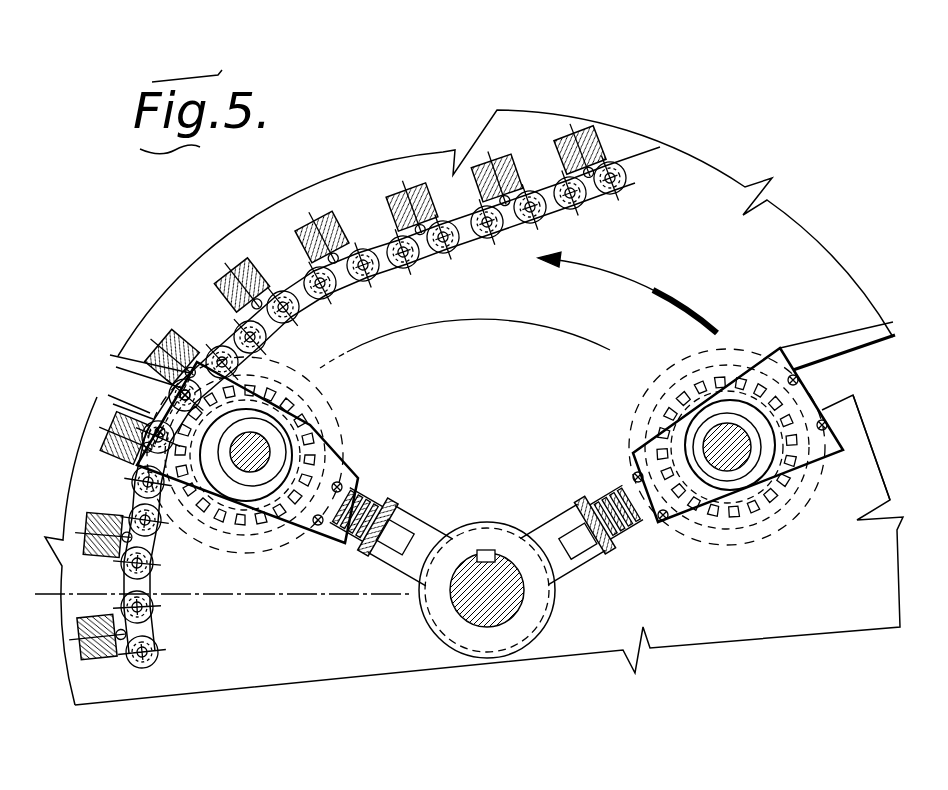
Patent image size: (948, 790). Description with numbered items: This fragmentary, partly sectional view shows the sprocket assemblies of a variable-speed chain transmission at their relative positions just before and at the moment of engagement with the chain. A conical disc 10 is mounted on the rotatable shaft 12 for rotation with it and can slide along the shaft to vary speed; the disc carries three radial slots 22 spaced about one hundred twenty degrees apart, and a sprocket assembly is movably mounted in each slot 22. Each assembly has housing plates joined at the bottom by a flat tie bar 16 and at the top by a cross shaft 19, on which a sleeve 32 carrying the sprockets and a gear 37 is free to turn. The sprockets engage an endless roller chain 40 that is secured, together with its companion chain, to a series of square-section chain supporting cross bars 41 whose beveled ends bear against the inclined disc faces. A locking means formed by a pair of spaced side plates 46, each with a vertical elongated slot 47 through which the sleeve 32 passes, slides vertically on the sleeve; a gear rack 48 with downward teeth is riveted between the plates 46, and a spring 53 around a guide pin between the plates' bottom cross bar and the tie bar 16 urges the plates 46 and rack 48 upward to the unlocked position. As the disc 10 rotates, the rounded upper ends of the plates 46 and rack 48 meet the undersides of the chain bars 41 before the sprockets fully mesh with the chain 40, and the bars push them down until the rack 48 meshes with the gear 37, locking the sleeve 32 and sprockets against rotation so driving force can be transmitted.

The conical disc 10 is at (645, 142).
The rotatable shaft 12 is at (477, 613).
The tie bar 16 is at (368, 552).
The cross shaft 19 is at (268, 440).
The radial slot 22 is at (405, 525).
The sleeve 32 is at (265, 438).
The gear 37 is at (220, 522).
The endless roller chain 40 is at (378, 243).
The chain supporting cross bar 41 is at (303, 243).
The plate 46 is at (140, 468).
The elongated slot 47 is at (310, 487).
The gear rack 48 is at (106, 394).
The spring 53 is at (357, 490).